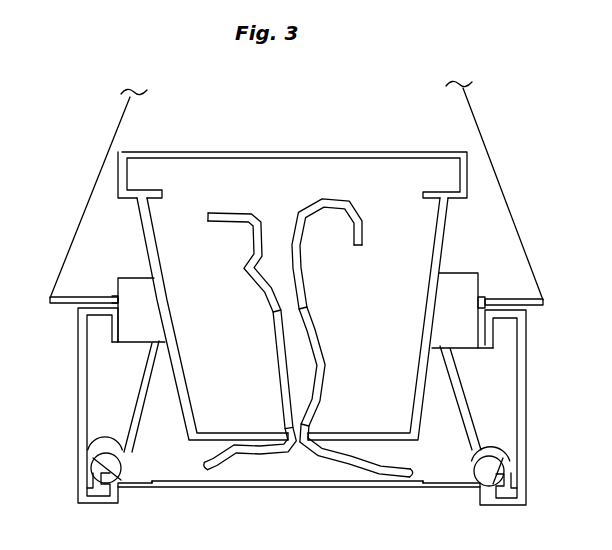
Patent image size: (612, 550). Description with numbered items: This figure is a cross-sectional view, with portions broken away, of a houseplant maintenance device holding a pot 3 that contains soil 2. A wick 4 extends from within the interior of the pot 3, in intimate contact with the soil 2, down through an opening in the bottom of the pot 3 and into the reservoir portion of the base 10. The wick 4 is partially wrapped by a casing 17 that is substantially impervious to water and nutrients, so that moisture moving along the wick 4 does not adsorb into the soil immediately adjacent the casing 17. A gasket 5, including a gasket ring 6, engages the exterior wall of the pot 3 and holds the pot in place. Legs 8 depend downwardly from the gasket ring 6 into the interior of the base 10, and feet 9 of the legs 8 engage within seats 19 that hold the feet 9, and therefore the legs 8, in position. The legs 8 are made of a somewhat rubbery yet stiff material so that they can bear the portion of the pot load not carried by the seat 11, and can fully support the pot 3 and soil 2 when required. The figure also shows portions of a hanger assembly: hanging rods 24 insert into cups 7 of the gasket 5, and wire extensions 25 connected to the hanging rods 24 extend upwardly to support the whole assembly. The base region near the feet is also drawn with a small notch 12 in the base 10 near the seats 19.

The soil 2 is at (256, 217).
The pot 3 is at (447, 236).
The wick 4 is at (306, 285).
The gasket 5 is at (112, 284).
The gasket ring 6 is at (463, 280).
The cups 7 is at (481, 298).
The legs 8 is at (146, 421).
The feet 9 is at (122, 464).
The base 10 is at (78, 400).
The seat 11 is at (140, 347).
The slot 12 is at (93, 487).
The casing 17 is at (321, 357).
The seats 19 is at (105, 443).
The hanging rods 24 is at (58, 300).
The wire extensions 25 is at (70, 244).